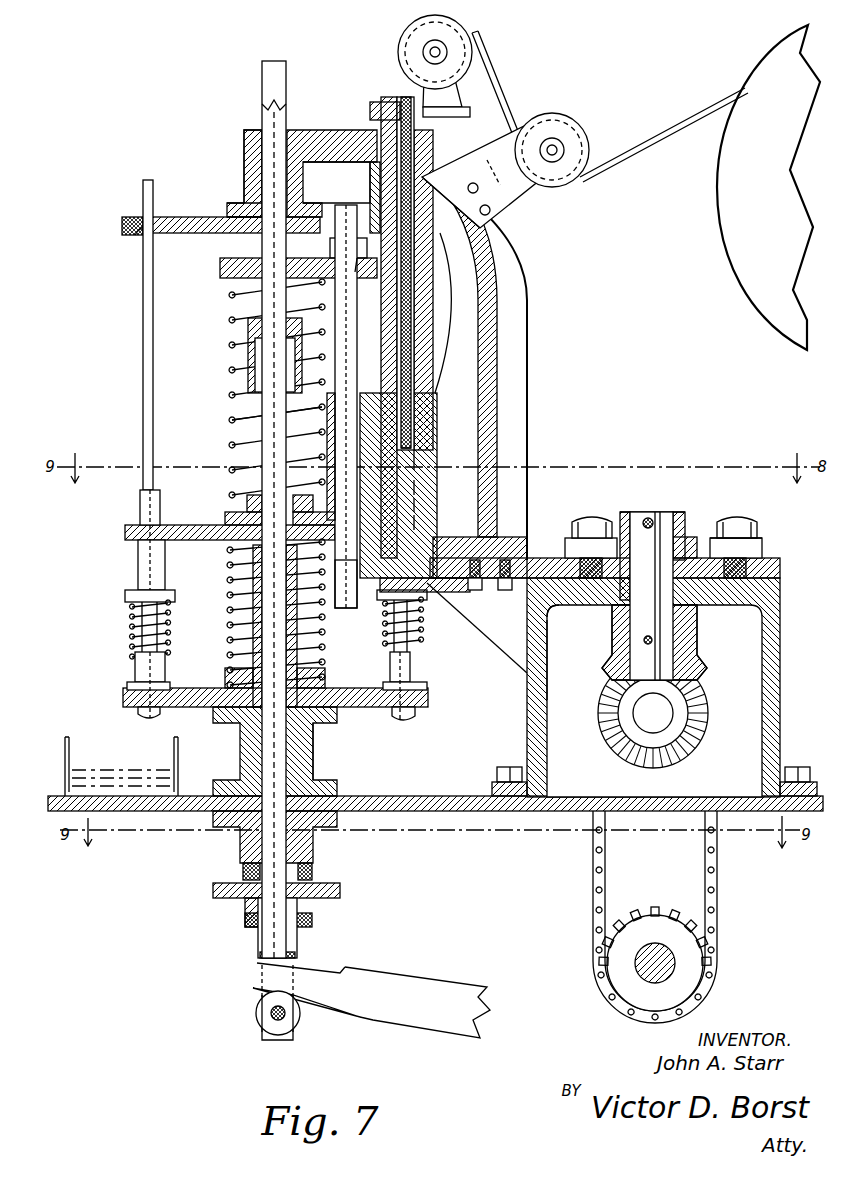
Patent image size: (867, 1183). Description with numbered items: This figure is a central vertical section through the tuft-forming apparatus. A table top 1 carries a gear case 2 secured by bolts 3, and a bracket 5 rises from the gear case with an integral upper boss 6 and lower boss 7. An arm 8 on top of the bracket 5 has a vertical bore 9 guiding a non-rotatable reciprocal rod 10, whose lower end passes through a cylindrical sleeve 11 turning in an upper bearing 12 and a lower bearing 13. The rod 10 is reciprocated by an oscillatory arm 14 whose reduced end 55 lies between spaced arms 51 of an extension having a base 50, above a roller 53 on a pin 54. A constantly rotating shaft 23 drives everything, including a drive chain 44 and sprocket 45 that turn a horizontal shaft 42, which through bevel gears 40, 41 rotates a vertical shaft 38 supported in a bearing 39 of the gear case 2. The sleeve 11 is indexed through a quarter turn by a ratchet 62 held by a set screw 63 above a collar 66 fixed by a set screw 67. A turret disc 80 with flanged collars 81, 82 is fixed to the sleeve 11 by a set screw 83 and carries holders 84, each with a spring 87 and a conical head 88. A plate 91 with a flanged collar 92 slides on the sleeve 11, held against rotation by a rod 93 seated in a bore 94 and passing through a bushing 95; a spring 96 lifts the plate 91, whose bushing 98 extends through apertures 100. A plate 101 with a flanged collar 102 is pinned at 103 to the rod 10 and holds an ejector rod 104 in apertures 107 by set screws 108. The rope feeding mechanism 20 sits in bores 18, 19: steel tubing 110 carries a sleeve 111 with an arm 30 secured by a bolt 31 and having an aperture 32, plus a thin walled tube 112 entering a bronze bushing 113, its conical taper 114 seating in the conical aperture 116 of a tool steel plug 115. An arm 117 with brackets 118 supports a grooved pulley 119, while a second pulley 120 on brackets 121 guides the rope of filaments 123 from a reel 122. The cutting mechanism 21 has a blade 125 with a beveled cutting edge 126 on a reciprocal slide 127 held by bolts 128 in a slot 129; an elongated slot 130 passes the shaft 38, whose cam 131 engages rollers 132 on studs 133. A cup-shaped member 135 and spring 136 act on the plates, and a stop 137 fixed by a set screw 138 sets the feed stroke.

The table top 1 is at (428, 796).
The gear case 2 is at (528, 706).
The bolts 3 is at (502, 768).
The bracket 5 is at (527, 335).
The upper boss 6 is at (370, 189).
The lower boss 7 is at (436, 402).
The arm 8 is at (330, 130).
The vertical bore 9 is at (244, 143).
The reciprocal rod 10 is at (262, 247).
The cylindrical sleeve 11 is at (253, 647).
The upper bearing 12 is at (313, 762).
The lower bearing 13 is at (240, 853).
The oscillatory arm 14 is at (433, 985).
The vertical bore of upper boss 18 is at (427, 176).
The vertical bore of lower boss 19 is at (430, 487).
The rope feeding mechanism 20 is at (414, 324).
The cutting mechanism 21 is at (770, 526).
The shaft 23 is at (675, 966).
The arm 30 is at (326, 288).
The bolt 31 is at (447, 276).
The aperture 32 is at (222, 270).
The vertical shaft 38 is at (660, 618).
The bearing 39 is at (630, 610).
The bevel gear 40 is at (709, 728).
The bevel gear 41 is at (700, 680).
The horizontal shaft 42 is at (648, 716).
The drive chain 44 is at (718, 911).
The sprocket 45 is at (645, 940).
The base 50 is at (297, 952).
The spaced arms 51 is at (262, 1040).
The roller 53 is at (293, 1027).
The pin 54 is at (271, 1022).
The reduced end 55 is at (345, 968).
The ratchet 62 is at (340, 893).
The set screw 63 is at (313, 872).
The collar 66 is at (312, 928).
The set screw 67 is at (245, 920).
The turret disc 80 is at (205, 690).
The flanged collar 81 is at (314, 736).
The flanged collar 82 is at (325, 679).
The set screw 83 is at (312, 665).
The holder 84 is at (136, 676).
The spring 87 is at (132, 632).
The conical head 88 is at (415, 718).
The plate 91 is at (225, 517).
The flanged collar 92 is at (247, 500).
The rod 93 is at (357, 356).
The bore 94 is at (357, 380).
The bushing 95 is at (430, 505).
The spring 96 is at (232, 568).
The bushing 98 is at (140, 566).
The apertures 100 is at (125, 538).
The plate 101 is at (218, 233).
The flanged collar 102 is at (230, 210).
The pin 103 is at (262, 196).
The ejector rod 104 is at (143, 357).
The apertures 107 is at (140, 240).
The set screws 108 is at (122, 232).
The steel tubing 110 is at (386, 100).
The sleeve 111 is at (372, 174).
The thin walled tube 112 is at (409, 366).
The bronze bushing 113 is at (430, 458).
The conical taper 114 is at (430, 437).
The tool steel plug 115 is at (430, 523).
The conical aperture 116 is at (372, 590).
The arm 117 is at (495, 105).
The brackets 118 is at (445, 70).
The grooved pulley 119 is at (460, 46).
The second pulley 120 is at (576, 138).
The brackets 121 is at (522, 190).
The reel 122 is at (728, 222).
The rope of filaments 123 is at (672, 126).
The blade 125 is at (467, 622).
The beveled cutting edge 126 is at (465, 590).
The reciprocal slide 127 is at (541, 560).
The bolts 128 is at (482, 590).
The slot 129 is at (558, 608).
The elongated slot 130 is at (662, 512).
The cam 131 is at (686, 540).
The rollers 132 is at (592, 518).
The studs 133 is at (603, 517).
The cup-shaped member 135 is at (248, 372).
The spring 136 is at (234, 429).
The stop 137 is at (330, 249).
The set screw 138 is at (356, 275).